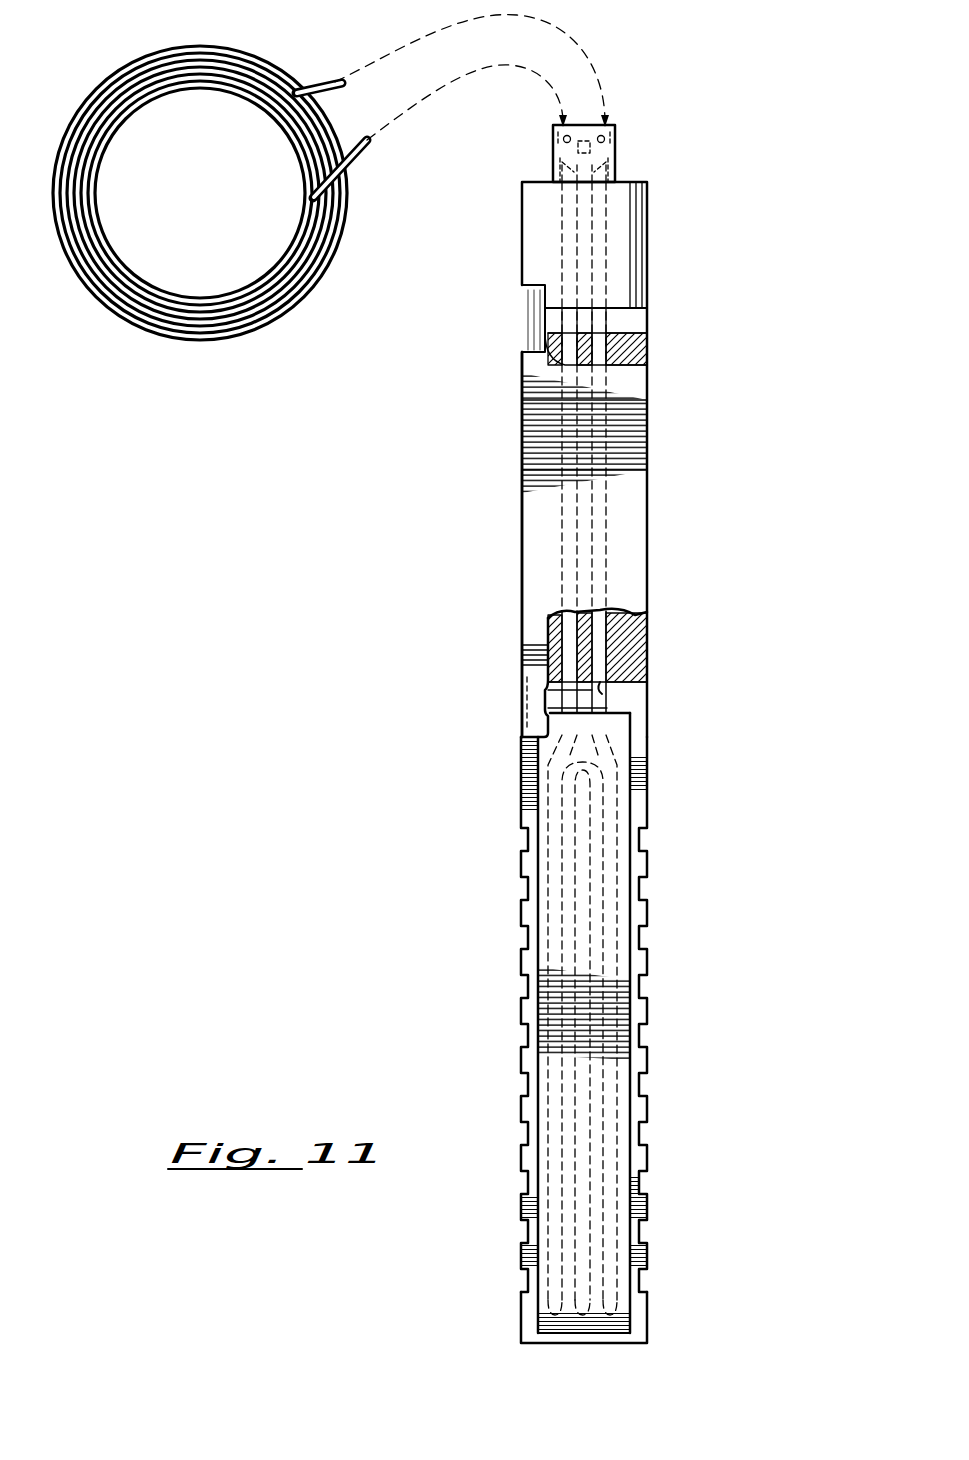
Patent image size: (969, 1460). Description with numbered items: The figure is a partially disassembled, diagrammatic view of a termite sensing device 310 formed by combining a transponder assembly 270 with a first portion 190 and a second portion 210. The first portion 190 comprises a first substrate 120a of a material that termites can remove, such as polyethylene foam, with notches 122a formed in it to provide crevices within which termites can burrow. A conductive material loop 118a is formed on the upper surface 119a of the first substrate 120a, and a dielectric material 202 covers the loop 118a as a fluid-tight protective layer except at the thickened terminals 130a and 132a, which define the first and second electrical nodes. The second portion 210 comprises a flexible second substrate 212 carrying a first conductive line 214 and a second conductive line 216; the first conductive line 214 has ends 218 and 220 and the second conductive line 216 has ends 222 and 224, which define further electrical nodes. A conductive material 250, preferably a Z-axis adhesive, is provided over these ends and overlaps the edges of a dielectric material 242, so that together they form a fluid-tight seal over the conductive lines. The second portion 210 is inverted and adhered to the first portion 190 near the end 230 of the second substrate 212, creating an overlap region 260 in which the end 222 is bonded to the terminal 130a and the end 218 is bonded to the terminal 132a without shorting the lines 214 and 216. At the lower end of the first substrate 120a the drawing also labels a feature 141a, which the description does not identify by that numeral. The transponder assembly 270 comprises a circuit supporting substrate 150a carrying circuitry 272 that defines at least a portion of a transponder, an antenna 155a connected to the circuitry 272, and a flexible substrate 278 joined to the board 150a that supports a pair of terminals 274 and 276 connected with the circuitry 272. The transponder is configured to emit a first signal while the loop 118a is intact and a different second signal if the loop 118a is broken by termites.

The antenna 155a is at (85, 290).
The transponder assembly 270 is at (727, 233).
The circuitry 272 is at (553, 156).
The circuit supporting substrate 150a is at (553, 170).
The second substrate 212 is at (623, 537).
The substrate 278 is at (538, 238).
The terminal 274 is at (560, 296).
The end of second conductive line 224 is at (548, 323).
The terminal 276 is at (612, 290).
The end of first conductive line 220 is at (610, 322).
The second portion 210 is at (670, 424).
The dielectric material 242 is at (537, 545).
The termite sensing device 310 is at (375, 517).
The conductive material 250 is at (633, 612).
The second conductive line 216 is at (550, 633).
The first conductive line 214 is at (600, 645).
The end of first conductive line 218 is at (608, 688).
The terminal 130a is at (540, 690).
The terminal 132a is at (612, 706).
The overlap region 260 is at (440, 665).
The end of second conductive line 222 is at (540, 708).
The end of substrate 230 is at (668, 737).
The notches 122a is at (512, 887).
The first substrate 120a is at (530, 1057).
The conductive material loop 118a is at (620, 1154).
The upper surface 119a is at (655, 1004).
The dielectric material 202 is at (623, 1088).
The first portion 190 is at (458, 1228).
The end cap 141a is at (624, 1350).